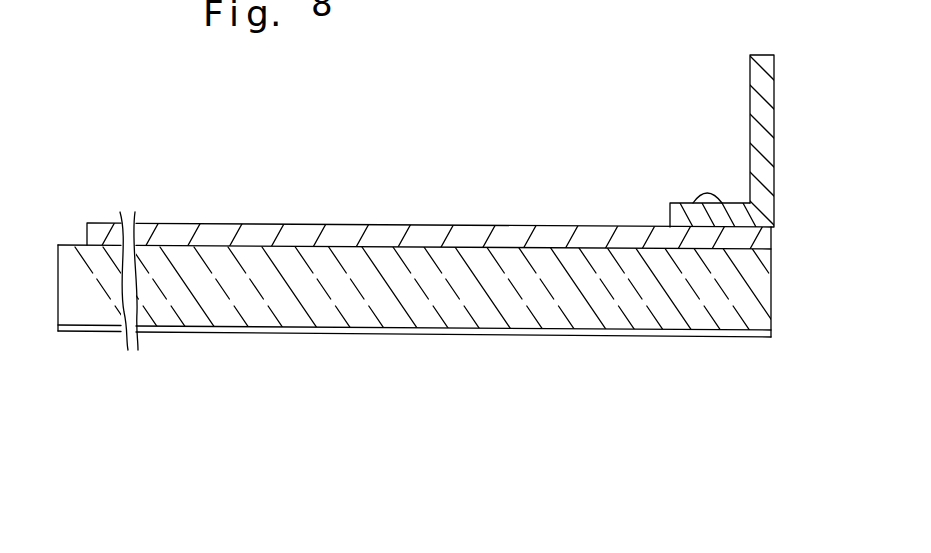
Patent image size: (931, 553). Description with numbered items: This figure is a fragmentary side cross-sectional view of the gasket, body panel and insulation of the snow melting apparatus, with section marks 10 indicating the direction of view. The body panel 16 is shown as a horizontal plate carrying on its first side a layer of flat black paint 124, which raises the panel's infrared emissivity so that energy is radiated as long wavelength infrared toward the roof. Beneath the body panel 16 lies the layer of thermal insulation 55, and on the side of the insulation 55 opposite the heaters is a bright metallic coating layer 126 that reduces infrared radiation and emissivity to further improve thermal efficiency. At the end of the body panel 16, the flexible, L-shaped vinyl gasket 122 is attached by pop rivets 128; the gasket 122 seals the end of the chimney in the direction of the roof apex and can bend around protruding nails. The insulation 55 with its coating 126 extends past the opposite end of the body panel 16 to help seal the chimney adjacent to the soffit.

The section line 10- 10 is at (100, 98).
The body panel 16 is at (263, 237).
The layer of thermal insulation 55 is at (252, 308).
The L-shaped vinyl gasket 122 is at (755, 135).
The layer of flat black paint 124 is at (390, 225).
The bright metallic coating layer 126 is at (343, 335).
The pop rivets 128 is at (697, 197).